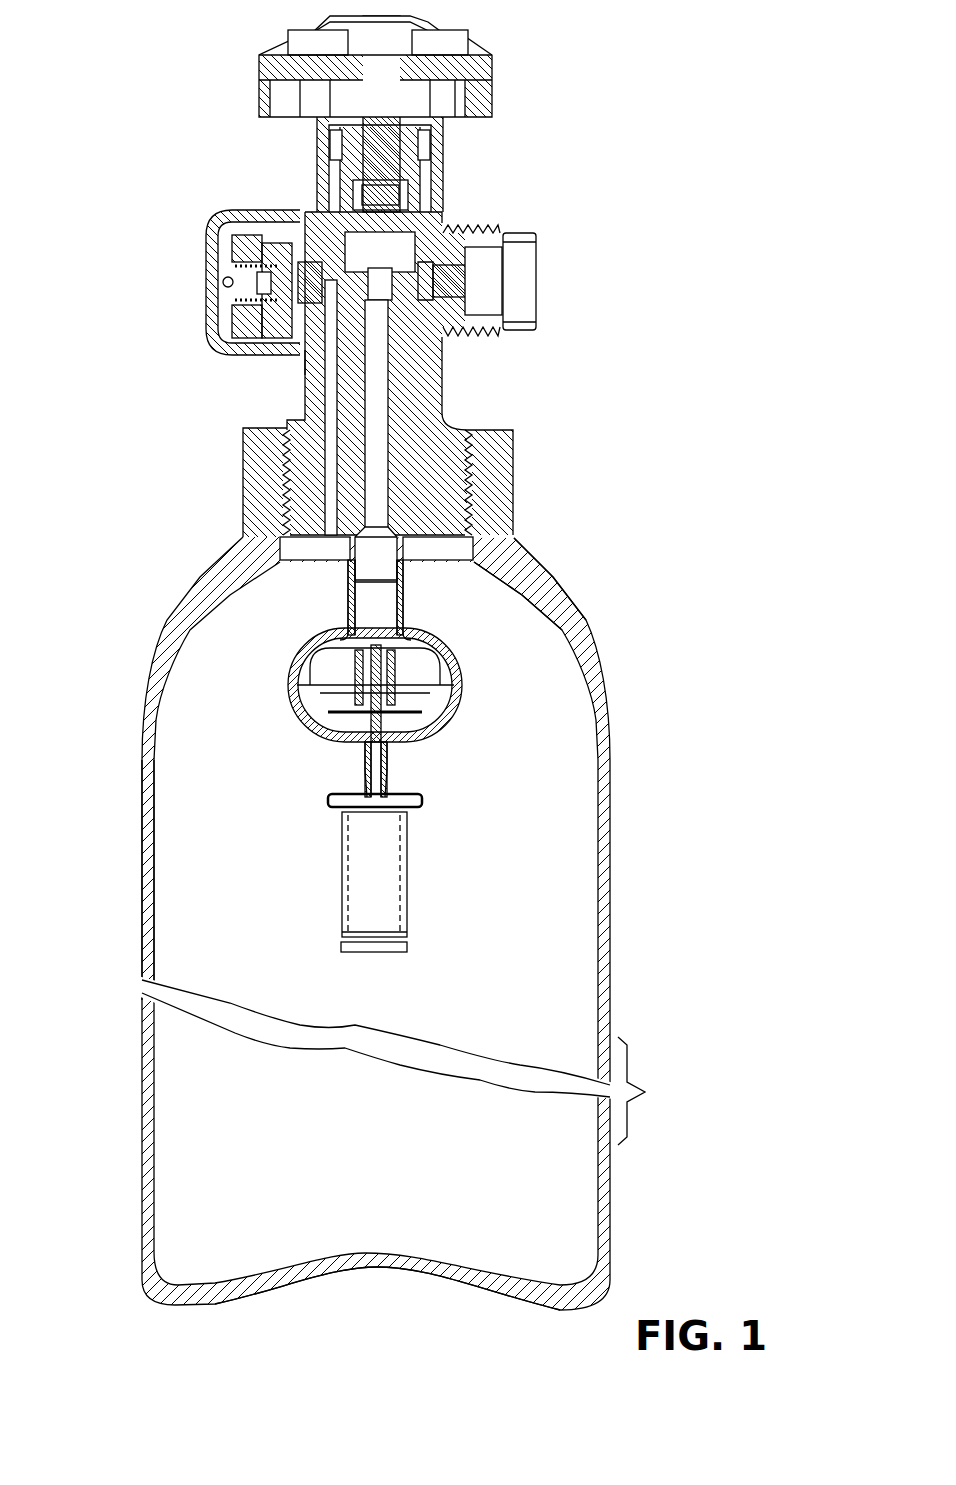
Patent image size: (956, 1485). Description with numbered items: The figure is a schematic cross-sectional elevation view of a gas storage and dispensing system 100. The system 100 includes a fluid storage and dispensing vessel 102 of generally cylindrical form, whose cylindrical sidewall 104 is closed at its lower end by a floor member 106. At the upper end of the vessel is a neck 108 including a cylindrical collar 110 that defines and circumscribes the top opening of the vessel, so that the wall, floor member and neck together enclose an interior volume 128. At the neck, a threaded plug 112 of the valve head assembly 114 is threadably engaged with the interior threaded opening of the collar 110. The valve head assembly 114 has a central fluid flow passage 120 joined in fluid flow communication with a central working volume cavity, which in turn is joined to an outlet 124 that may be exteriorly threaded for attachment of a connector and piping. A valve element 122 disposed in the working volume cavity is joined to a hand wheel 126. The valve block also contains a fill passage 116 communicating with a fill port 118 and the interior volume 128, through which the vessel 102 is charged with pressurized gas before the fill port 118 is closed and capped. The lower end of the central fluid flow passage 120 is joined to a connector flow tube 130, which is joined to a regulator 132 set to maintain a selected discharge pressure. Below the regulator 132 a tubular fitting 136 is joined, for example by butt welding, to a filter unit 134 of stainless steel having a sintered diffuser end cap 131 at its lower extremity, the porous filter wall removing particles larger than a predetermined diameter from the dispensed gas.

The gas storage and dispensing system 100 is at (158, 527).
The fluid storage and dispensing vessel 102 is at (610, 818).
The cylindrical sidewall 104 is at (148, 768).
The floor member 106 is at (287, 1283).
The neck 108 is at (540, 580).
The cylindrical collar 110 is at (490, 495).
The threaded plug 112 is at (425, 404).
The valve head assembly 114 is at (306, 362).
The fill passage 116 is at (330, 388).
The fill port 118 is at (207, 246).
The central fluid flow passage 120 is at (380, 370).
The valve element 122 is at (423, 267).
The outlet 124 is at (525, 270).
The hand wheel 126 is at (478, 80).
The interior volume 128 is at (410, 1221).
The connector flow tube 130 is at (350, 592).
The diffuser end cap 131 is at (385, 948).
The regulator 132 is at (440, 725).
The filter unit 134 is at (400, 876).
The tubular fitting 136 is at (385, 783).